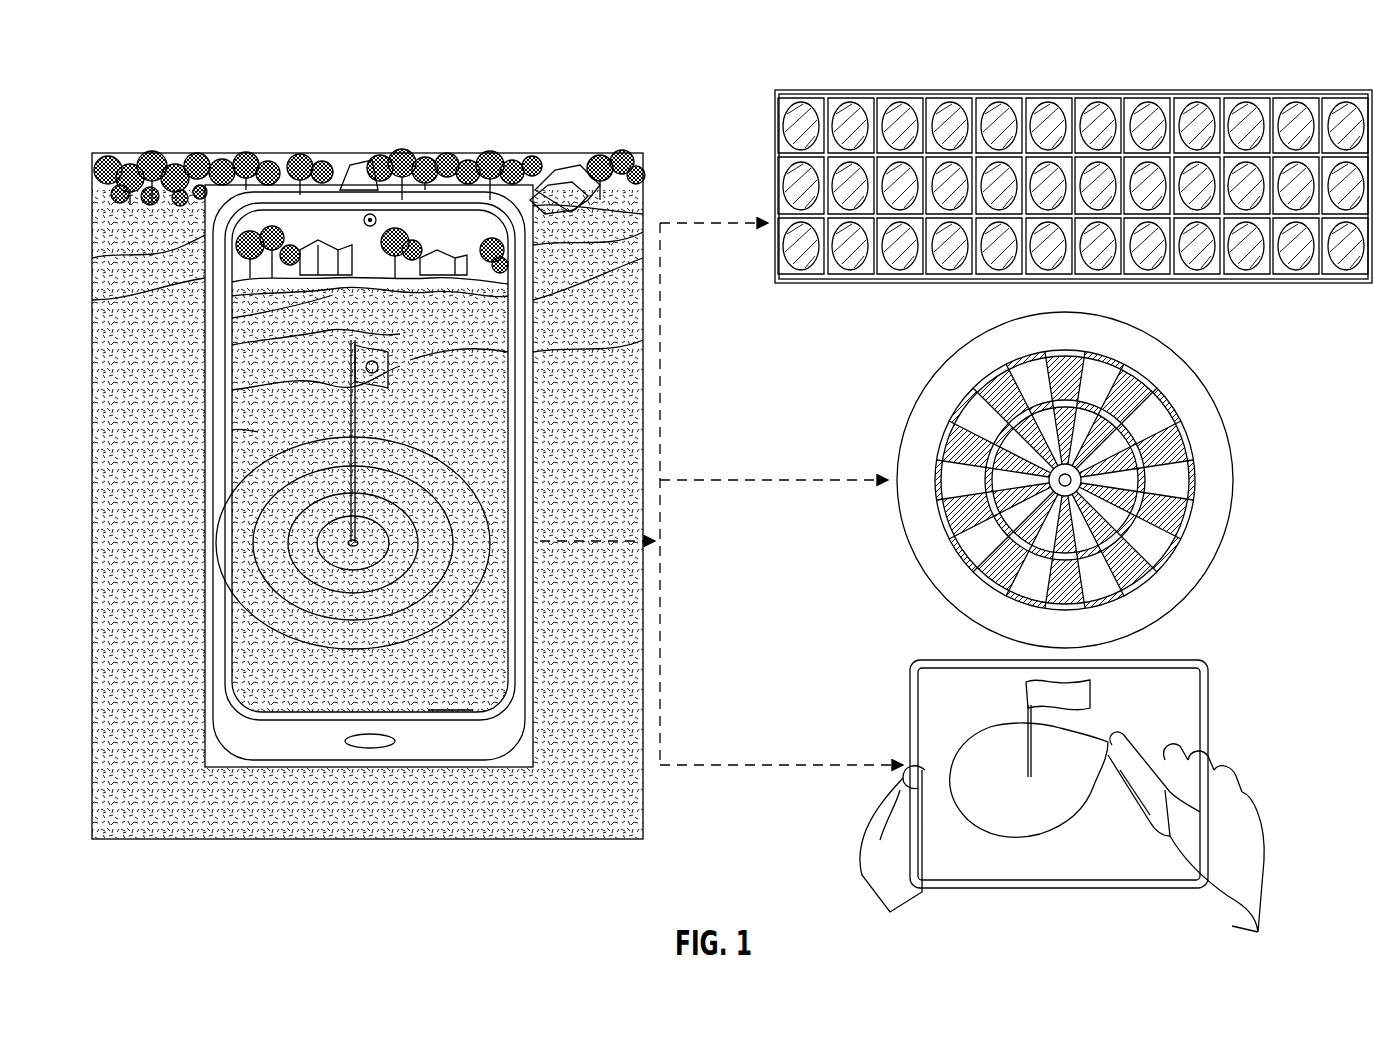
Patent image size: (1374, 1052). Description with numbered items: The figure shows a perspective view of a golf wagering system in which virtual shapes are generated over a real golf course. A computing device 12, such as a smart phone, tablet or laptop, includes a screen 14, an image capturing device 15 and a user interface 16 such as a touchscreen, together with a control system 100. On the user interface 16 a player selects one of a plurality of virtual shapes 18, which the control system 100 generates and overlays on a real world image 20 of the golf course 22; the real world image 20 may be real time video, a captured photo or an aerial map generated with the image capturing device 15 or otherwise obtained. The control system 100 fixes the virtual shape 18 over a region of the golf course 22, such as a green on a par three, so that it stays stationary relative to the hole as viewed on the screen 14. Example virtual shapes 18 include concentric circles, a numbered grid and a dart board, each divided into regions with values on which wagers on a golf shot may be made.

The computing device 12 is at (705, 483).
The screen 14 is at (300, 280).
The image capturing device 15 is at (374, 214).
The user interface 16 is at (258, 432).
The virtual shape 18 is at (240, 567).
The real world image 20 is at (430, 256).
The golf course 22 is at (622, 228).
The control system 100 is at (450, 695).